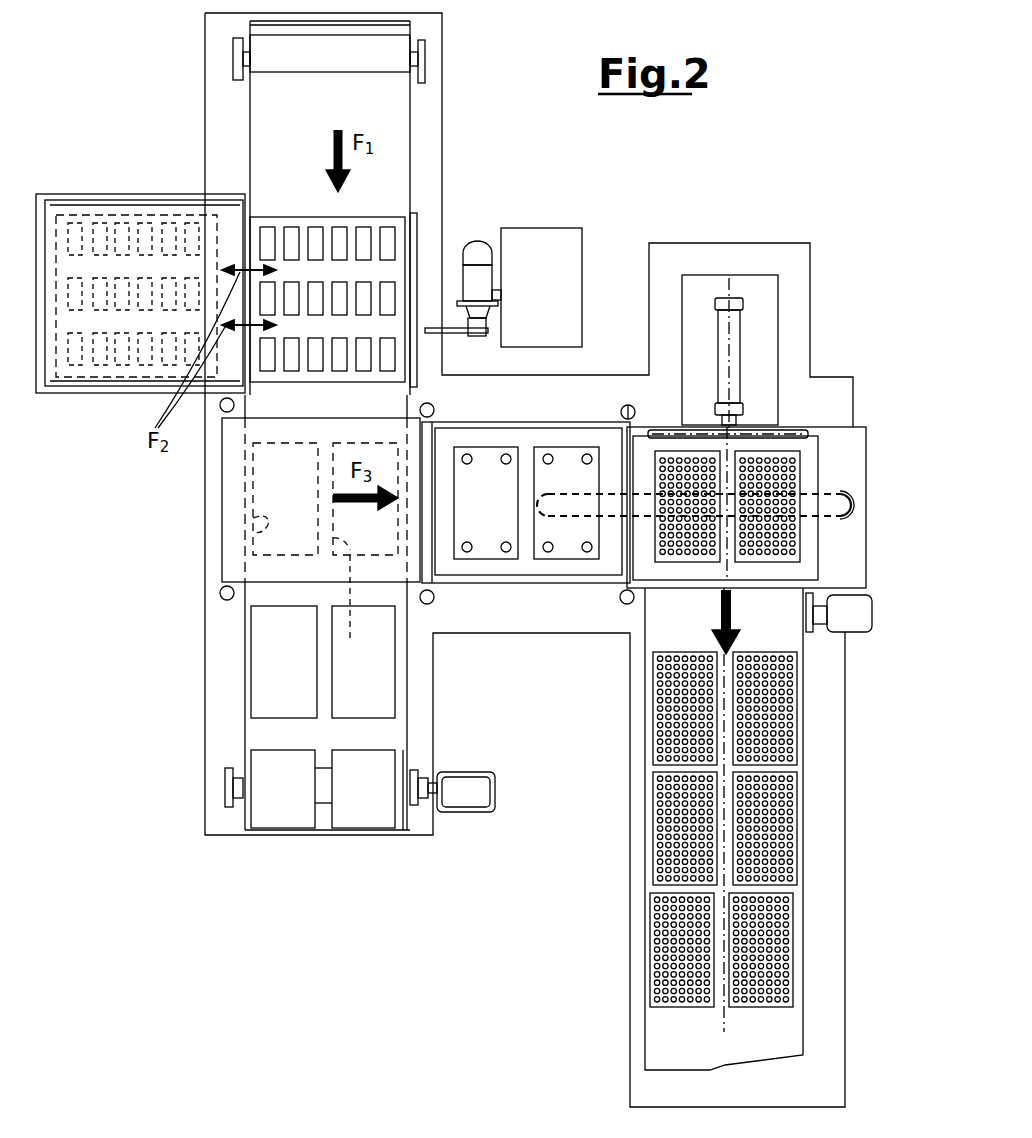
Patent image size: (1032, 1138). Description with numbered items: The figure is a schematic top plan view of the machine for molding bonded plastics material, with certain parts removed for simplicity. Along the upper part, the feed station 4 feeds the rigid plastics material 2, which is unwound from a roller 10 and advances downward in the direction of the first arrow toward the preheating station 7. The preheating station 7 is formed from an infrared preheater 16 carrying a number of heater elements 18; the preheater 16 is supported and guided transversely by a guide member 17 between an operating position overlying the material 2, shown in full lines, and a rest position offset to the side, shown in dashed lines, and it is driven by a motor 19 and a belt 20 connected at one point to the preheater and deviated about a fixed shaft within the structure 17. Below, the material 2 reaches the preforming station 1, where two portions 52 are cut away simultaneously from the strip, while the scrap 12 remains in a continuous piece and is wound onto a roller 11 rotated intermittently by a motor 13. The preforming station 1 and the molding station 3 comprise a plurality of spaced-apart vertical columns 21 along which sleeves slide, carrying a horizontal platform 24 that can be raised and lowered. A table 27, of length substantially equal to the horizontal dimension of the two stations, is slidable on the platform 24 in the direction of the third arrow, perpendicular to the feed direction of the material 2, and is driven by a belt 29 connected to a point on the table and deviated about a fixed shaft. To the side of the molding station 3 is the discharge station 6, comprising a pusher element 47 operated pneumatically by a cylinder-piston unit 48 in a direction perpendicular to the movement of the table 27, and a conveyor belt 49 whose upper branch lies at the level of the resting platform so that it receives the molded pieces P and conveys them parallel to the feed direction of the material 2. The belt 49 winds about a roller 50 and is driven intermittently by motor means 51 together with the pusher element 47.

The preforming station 1 is at (178, 516).
The rigid plastics material 2 is at (394, 417).
The molding station 3 is at (512, 600).
The feed station 4 is at (432, 190).
The discharge station 6 is at (864, 415).
The preheating station 7 is at (428, 250).
The roller 10 is at (412, 67).
The roller 11 is at (402, 832).
The scrap 12 is at (246, 733).
The motor 13 is at (471, 800).
The preheater 16 is at (230, 314).
The guide member 17 is at (232, 220).
The heater elements 18 is at (320, 242).
The motor 19 is at (480, 250).
The belt 20 is at (450, 338).
The vertical columns 21 is at (221, 411).
The horizontal platform 24 is at (212, 522).
The table 27 is at (545, 596).
The belt 29 is at (832, 494).
The pusher element 47 is at (793, 430).
The cylinder-piston unit 48 is at (737, 330).
The conveyor belt 49 is at (780, 625).
The roller 50 is at (811, 628).
The motor means 51 is at (846, 600).
The portions 52 is at (238, 540).
The molded pieces P is at (665, 850).